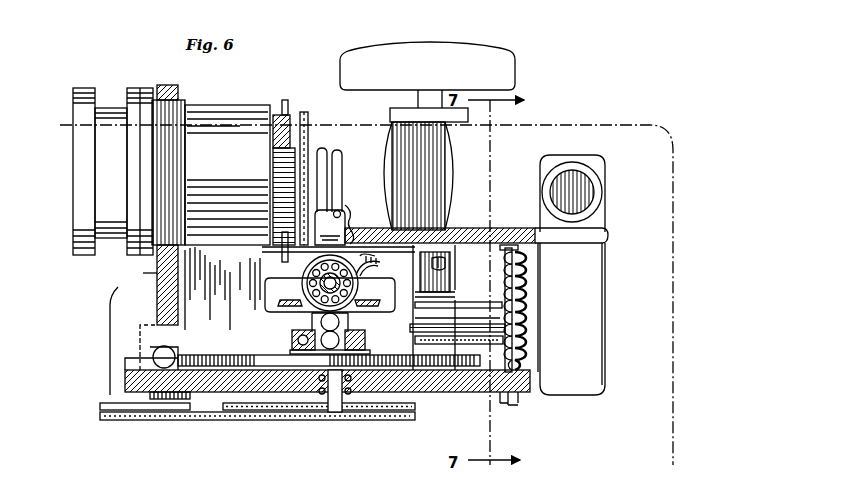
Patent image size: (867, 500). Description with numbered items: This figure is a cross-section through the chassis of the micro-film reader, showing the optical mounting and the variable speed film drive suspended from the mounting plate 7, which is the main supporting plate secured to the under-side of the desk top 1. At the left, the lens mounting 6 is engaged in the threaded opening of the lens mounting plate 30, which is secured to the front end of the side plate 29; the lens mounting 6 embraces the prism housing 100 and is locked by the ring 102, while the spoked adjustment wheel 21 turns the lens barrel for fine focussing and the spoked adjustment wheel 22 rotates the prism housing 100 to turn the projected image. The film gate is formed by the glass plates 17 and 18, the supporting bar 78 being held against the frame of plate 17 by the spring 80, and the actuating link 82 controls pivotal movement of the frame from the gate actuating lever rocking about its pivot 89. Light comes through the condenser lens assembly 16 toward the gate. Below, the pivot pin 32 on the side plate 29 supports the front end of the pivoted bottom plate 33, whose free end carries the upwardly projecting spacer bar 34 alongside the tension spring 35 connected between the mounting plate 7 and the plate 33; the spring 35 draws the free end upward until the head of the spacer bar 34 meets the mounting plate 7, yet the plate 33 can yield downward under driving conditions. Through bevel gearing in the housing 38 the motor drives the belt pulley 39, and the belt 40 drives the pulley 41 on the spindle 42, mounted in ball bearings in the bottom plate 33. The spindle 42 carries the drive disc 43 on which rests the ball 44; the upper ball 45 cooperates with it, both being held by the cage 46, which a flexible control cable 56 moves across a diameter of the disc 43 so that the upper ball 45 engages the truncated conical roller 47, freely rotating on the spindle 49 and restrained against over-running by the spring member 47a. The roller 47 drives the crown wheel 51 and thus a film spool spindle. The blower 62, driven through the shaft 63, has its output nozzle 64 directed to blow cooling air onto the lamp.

The top 1 is at (565, 121).
The lens mounting 6 is at (228, 108).
The mounting plate 7 is at (490, 229).
The condenser lens assembly 16 is at (448, 165).
The plate 17 is at (340, 157).
The plate 18 is at (321, 152).
The spoked adjustment wheel 21 is at (306, 128).
The spoked adjustment wheel 22 is at (285, 112).
The side plate 29 is at (145, 340).
The lens mounting plate 30 is at (157, 297).
The pivot pin 32 is at (170, 348).
The bottom plate 33 is at (125, 375).
The spacer bar 34 is at (527, 281).
The tension spring 35 is at (499, 280).
The housing 38 is at (112, 320).
The belt pulley 39 is at (178, 412).
The belt 40 is at (204, 420).
The pulley 41 is at (340, 420).
The spindle 42 is at (332, 412).
The drive disc 43 is at (222, 346).
The ball 44 is at (292, 346).
The upper ball 45 is at (318, 322).
The cage 46 is at (290, 339).
The truncated conical roller 47 is at (306, 272).
The spring member 47a is at (372, 264).
The spindle 49 is at (312, 290).
The crown wheel 51 is at (373, 294).
The flexible control cable 56 is at (422, 345).
The blower 62 is at (606, 307).
The shaft 63 is at (458, 316).
The output nozzle 64 is at (600, 200).
The supporting bar 78 is at (343, 210).
The spring 80 is at (350, 218).
The actuating link 82 is at (424, 307).
The pivot 89 is at (450, 266).
The prism housing 100 is at (107, 108).
The ring 102 is at (143, 90).